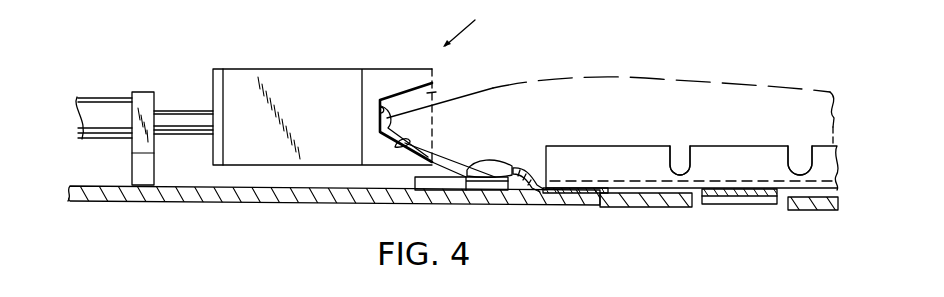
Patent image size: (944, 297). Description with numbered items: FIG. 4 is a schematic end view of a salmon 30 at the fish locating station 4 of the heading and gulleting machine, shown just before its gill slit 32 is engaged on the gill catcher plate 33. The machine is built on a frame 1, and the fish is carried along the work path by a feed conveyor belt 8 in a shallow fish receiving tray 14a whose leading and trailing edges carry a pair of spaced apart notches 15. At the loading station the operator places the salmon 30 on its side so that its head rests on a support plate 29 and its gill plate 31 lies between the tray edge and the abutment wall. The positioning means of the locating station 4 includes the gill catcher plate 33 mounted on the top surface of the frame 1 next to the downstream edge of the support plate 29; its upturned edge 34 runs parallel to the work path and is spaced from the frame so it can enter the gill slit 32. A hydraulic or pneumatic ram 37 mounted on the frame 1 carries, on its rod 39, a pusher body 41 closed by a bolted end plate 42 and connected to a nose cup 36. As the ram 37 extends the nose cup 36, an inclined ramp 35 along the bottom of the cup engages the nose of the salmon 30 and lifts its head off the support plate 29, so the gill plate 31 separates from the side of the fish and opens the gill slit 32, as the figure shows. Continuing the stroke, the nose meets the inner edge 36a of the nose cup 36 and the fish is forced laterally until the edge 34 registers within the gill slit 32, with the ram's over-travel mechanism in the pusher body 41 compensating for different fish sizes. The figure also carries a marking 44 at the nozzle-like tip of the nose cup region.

The frame 1 is at (280, 205).
The fish locating station 4 is at (466, 27).
The feed conveyor belt 8 is at (752, 207).
The fish receiving tray 14a is at (718, 153).
The notches 15 is at (681, 146).
The support plate 29 is at (490, 190).
The salmon 30 is at (685, 46).
The gill plate 31 is at (466, 170).
The gill slit 32 is at (480, 160).
The gill catcher plate 33 is at (598, 195).
The upturned edge 34 is at (528, 167).
The inclined ramp 35 is at (403, 143).
The nose cup 36 is at (398, 42).
The inner edge 36a is at (379, 109).
The ram 37 is at (103, 97).
The rod 39 is at (176, 132).
The pusher body 41 is at (230, 76).
The end plate 42 is at (214, 77).
The nozzle tip 44 is at (436, 92).